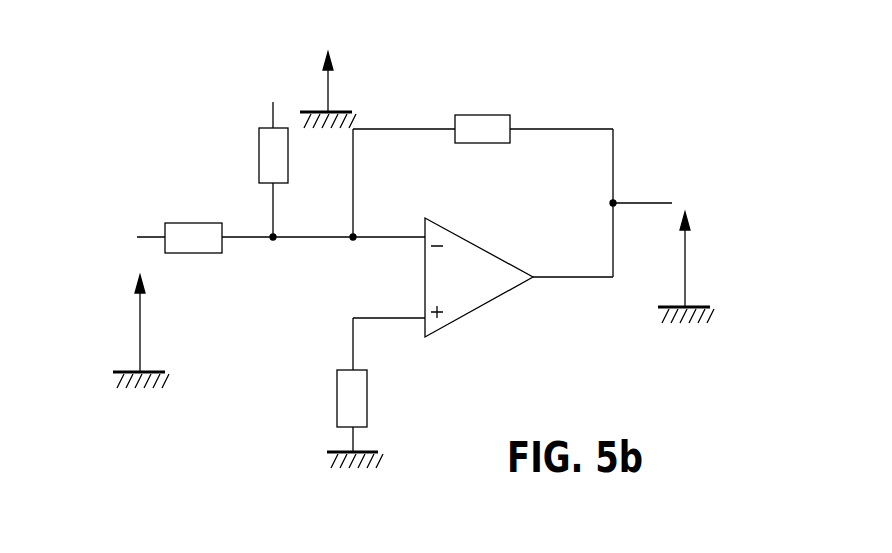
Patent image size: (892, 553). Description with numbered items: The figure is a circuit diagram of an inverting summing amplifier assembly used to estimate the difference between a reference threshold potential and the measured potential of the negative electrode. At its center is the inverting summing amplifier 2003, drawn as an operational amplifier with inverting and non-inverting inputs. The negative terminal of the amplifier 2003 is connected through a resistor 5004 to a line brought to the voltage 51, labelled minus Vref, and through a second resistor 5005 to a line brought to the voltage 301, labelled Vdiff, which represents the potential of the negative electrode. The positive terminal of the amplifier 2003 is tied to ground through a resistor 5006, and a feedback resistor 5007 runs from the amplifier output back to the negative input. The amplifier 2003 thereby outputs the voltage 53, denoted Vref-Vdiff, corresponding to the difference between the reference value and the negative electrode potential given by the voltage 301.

The resistor 5004 is at (193, 220).
The resistor 5005 is at (259, 143).
The resistor 5006 is at (337, 410).
The feedback resistor 5007 is at (498, 113).
The inverting summing amplifier 2003 is at (477, 307).
The voltage 301 is at (338, 47).
The voltage 53 is at (717, 217).
The voltage 51 is at (107, 303).